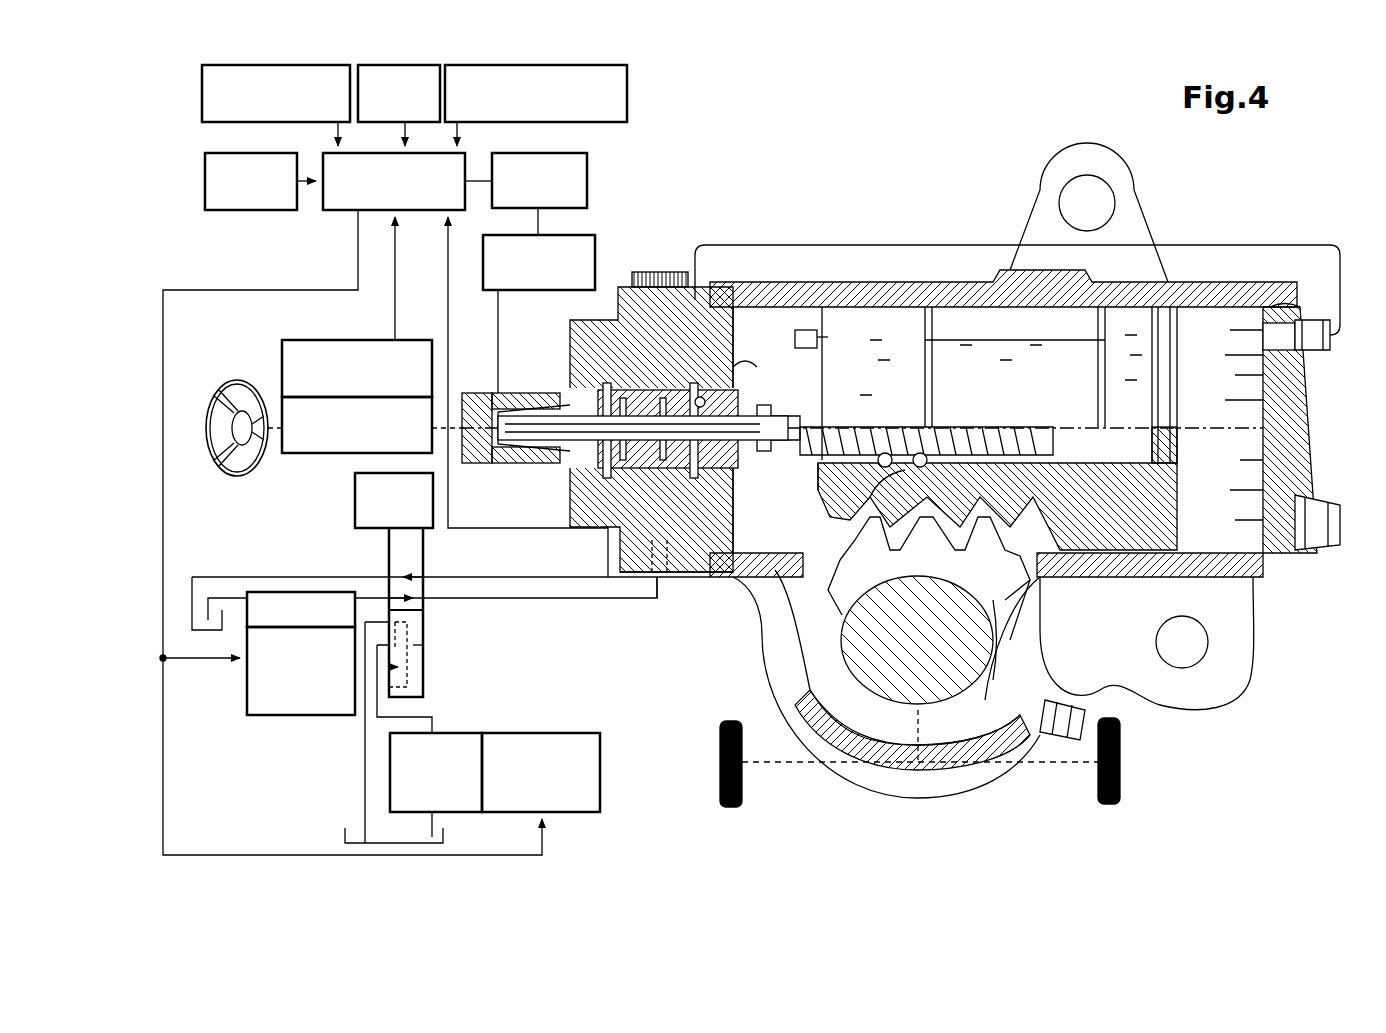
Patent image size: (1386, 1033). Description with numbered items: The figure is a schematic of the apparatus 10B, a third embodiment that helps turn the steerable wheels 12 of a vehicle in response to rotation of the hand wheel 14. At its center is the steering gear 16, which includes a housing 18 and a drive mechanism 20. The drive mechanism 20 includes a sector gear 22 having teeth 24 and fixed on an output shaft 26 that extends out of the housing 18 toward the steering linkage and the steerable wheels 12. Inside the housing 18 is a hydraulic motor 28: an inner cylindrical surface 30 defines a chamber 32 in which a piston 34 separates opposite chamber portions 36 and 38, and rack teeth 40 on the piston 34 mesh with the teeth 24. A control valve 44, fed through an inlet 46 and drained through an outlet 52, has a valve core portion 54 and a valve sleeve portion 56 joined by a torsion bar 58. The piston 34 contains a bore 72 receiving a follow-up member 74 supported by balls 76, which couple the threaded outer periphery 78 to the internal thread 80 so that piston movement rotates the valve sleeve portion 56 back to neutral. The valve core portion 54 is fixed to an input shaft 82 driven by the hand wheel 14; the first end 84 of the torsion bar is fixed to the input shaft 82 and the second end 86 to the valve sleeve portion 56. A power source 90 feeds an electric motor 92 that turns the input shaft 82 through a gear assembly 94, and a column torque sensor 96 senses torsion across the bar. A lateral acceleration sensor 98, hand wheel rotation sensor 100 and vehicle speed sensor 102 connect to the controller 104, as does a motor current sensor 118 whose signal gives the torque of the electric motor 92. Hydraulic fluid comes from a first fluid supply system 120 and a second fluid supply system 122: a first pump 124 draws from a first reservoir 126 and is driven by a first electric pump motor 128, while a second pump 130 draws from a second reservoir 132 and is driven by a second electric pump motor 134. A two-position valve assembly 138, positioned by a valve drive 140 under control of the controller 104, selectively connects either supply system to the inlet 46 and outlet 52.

The apparatus 10B is at (708, 188).
The steerable wheels 12 is at (720, 782).
The hand wheel 14 is at (238, 477).
The steering gear 16 is at (795, 229).
The housing 18 is at (1290, 425).
The drive mechanism 20 is at (832, 640).
The sector gear 22 is at (1010, 598).
The teeth 24 is at (845, 565).
The output shaft 26 is at (907, 634).
The hydraulic motor 28 is at (864, 330).
The inner cylindrical surface 30 is at (1263, 598).
The chamber 32 is at (1242, 338).
The piston 34 is at (1165, 517).
The chamber portion 36 is at (762, 325).
The chamber portion 38 is at (1228, 383).
The rack teeth 40 is at (850, 480).
The control valve 44 is at (737, 367).
The inlet 46 is at (688, 573).
The outlet 52 is at (597, 533).
The valve core portion 54 is at (645, 405).
The valve sleeve portion 56 is at (620, 483).
The torsion bar 58 is at (527, 460).
The bore 72 is at (1157, 452).
The follow-up member 74 is at (1045, 447).
The balls 76 is at (858, 450).
The outer periphery 78 is at (912, 447).
The internal thread 80 is at (950, 462).
The input shaft 82 is at (488, 470).
The first end 84 is at (510, 415).
The second end 86 is at (787, 442).
The power source 90 is at (274, 210).
The electric motor 92 is at (562, 194).
The gear assembly 94 is at (588, 252).
The column torque sensor 96 is at (656, 572).
The lateral acceleration sensor 98 is at (203, 85).
The hand wheel rotation sensor 100 is at (282, 396).
The vehicle speed sensor 102 is at (386, 122).
The controller 104 is at (335, 199).
The motor current sensor 118 is at (608, 100).
The first fluid supply system 120 is at (270, 744).
The second fluid supply system 122 is at (610, 802).
The first pump 124 is at (333, 592).
The first reservoir 126 is at (182, 595).
The first electric pump motor 128 is at (247, 697).
The second pump 130 is at (455, 742).
The second reservoir 132 is at (345, 832).
The second electric pump motor 134 is at (558, 742).
The two-position valve assembly 138 is at (432, 619).
The valve drive 140 is at (355, 500).